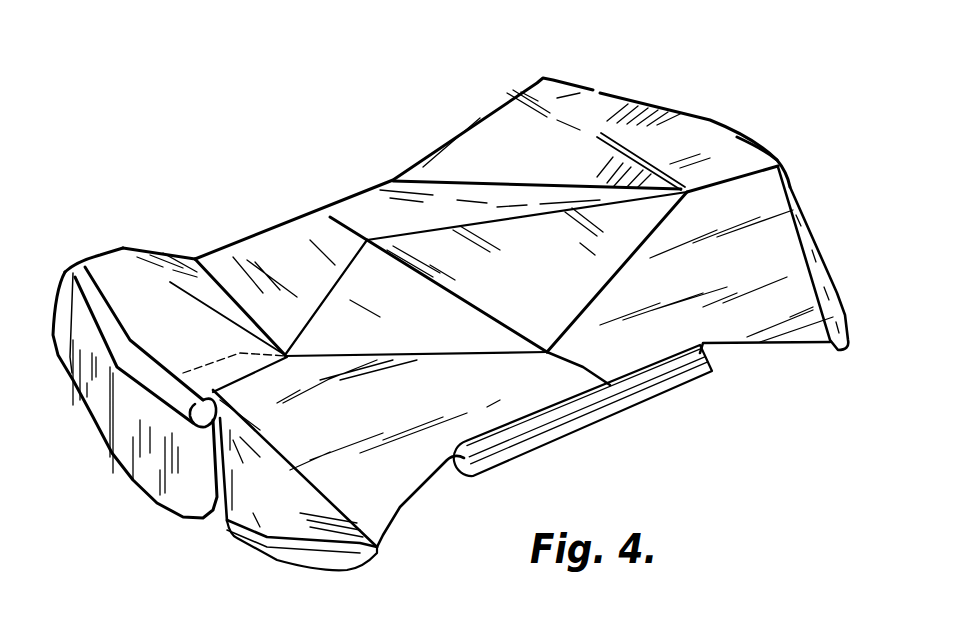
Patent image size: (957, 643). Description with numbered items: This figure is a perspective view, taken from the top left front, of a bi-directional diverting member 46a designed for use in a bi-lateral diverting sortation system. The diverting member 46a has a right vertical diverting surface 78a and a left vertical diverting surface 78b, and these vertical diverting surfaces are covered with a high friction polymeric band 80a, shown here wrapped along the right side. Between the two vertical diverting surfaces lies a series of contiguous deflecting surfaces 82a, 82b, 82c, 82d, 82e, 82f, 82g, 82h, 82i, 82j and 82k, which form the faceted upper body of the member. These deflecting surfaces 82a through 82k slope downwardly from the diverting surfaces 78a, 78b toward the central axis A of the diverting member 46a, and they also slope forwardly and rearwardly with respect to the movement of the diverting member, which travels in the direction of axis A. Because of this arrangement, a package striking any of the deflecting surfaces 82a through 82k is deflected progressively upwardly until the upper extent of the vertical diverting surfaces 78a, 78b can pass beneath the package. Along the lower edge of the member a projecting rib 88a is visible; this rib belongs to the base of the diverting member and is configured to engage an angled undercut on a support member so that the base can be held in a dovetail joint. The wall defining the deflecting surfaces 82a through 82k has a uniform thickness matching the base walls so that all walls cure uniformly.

The diverting member 46a is at (543, 74).
The left vertical diverting surface 78b is at (737, 137).
The right vertical diverting surface 78a is at (123, 470).
The high friction polymeric band 80a is at (197, 522).
The deflecting surface 82a is at (177, 324).
The deflecting surface 82b is at (167, 262).
The deflecting surface 82c is at (300, 504).
The deflecting surface 82d is at (383, 437).
The deflecting surface 82e is at (423, 311).
The deflecting surface 82f is at (318, 277).
The deflecting surface 82g is at (557, 267).
The deflecting surface 82h is at (660, 144).
The deflecting surface 82i is at (530, 167).
The deflecting surface 82j is at (803, 233).
The deflecting surface 82k is at (740, 270).
The projecting rib 88a is at (728, 434).
The central axis A is at (687, 430).